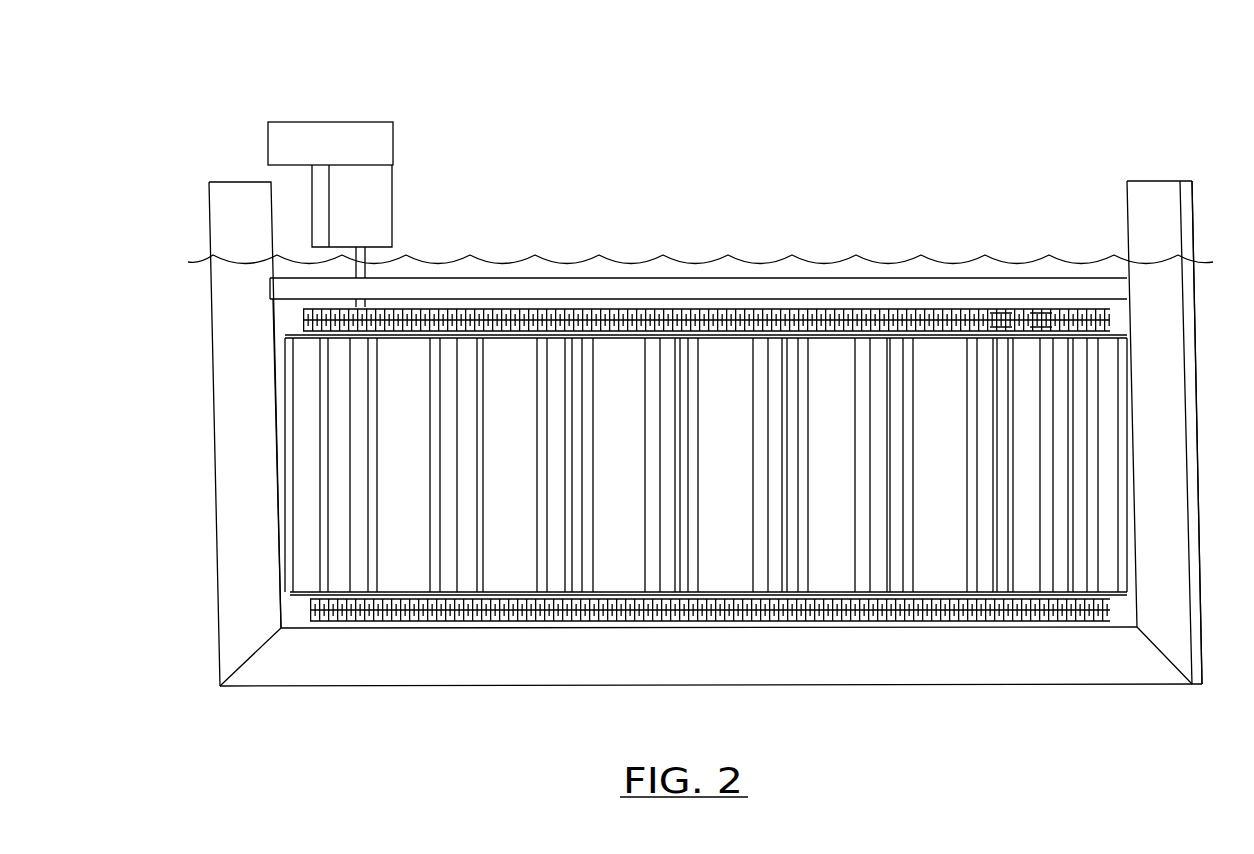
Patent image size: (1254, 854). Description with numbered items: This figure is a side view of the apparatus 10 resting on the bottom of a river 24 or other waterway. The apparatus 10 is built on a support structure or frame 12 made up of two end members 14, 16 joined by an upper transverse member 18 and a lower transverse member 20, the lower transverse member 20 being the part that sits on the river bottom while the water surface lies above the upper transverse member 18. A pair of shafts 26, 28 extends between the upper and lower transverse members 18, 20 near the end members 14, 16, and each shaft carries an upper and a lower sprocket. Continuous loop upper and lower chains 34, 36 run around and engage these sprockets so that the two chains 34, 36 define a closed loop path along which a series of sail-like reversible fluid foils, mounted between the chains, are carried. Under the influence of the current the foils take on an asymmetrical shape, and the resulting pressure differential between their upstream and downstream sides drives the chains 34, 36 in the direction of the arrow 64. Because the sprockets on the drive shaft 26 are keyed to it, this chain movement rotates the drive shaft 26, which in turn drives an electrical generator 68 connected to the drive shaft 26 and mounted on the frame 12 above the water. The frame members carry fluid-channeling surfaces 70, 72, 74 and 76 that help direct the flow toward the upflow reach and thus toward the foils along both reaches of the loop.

The apparatus 10 is at (912, 103).
The frame 12 is at (1148, 168).
The end member 14 is at (1128, 237).
The end member 16 is at (209, 217).
The upper transverse member 18 is at (654, 278).
The lower transverse member 20 is at (1015, 678).
The river 24 is at (580, 263).
The drive shaft 26 is at (365, 248).
The shaft 28 is at (1000, 285).
The upper chain 34 is at (607, 308).
The lower chain 36 is at (625, 567).
The arrow 64 is at (742, 477).
The electrical generator 68 is at (380, 147).
The fluid-channeling surface 70 is at (1152, 620).
The fluid-channeling surface 72 is at (248, 603).
The fluid-channeling surface 74 is at (1040, 303).
The fluid-channeling surface 76 is at (1080, 653).